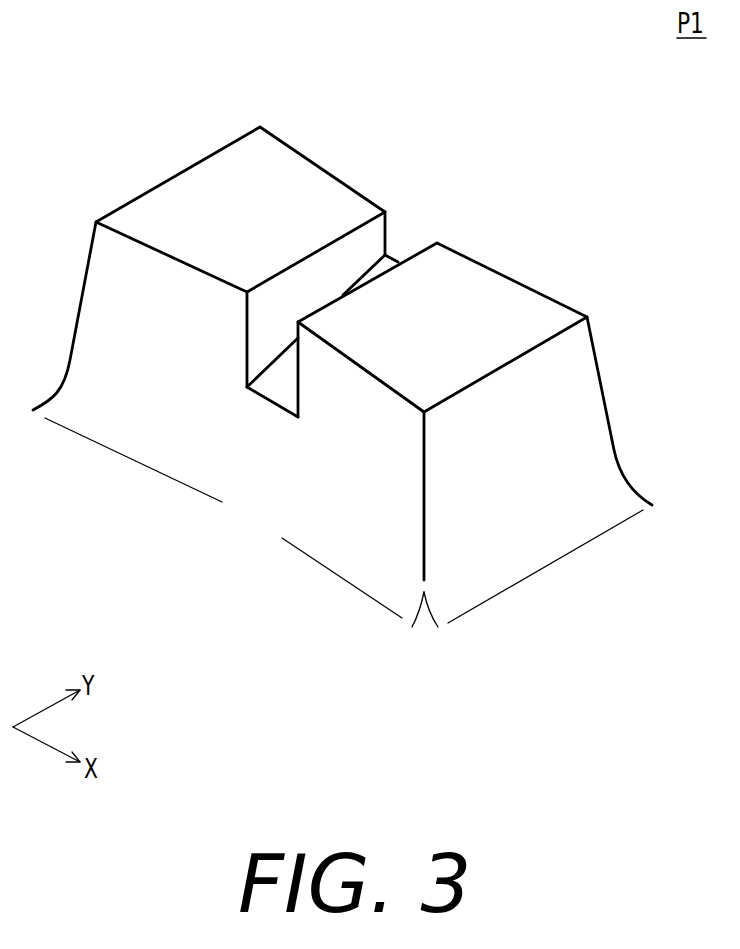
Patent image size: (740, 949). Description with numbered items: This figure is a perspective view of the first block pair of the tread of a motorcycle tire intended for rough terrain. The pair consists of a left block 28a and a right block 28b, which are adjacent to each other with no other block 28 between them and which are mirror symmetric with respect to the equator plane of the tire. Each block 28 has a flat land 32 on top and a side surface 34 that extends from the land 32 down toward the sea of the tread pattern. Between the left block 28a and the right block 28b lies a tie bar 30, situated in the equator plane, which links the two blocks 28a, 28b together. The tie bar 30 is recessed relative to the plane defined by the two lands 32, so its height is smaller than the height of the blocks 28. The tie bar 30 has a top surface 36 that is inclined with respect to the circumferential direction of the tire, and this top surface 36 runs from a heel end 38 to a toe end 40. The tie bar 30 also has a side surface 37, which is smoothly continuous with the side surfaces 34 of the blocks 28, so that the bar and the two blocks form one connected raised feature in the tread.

The block 28 is at (342, 353).
The left block 28a is at (249, 298).
The right block 28b is at (444, 408).
The tie bar 30 is at (263, 423).
The land 32 is at (282, 167).
The side surface 34 is at (132, 400).
The top surface 36 is at (390, 68).
The side surface 37 is at (262, 428).
The heel end 38 is at (283, 410).
The toe end 40 is at (400, 258).